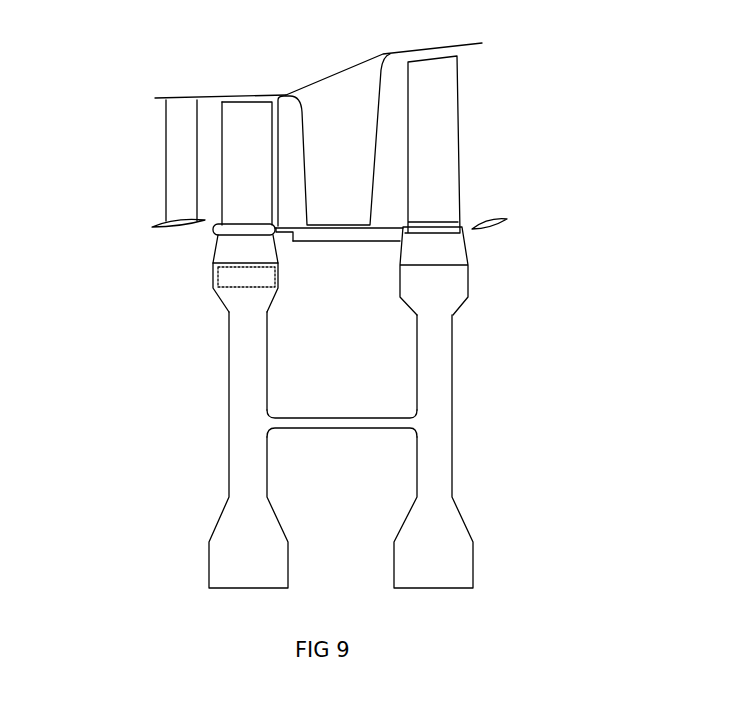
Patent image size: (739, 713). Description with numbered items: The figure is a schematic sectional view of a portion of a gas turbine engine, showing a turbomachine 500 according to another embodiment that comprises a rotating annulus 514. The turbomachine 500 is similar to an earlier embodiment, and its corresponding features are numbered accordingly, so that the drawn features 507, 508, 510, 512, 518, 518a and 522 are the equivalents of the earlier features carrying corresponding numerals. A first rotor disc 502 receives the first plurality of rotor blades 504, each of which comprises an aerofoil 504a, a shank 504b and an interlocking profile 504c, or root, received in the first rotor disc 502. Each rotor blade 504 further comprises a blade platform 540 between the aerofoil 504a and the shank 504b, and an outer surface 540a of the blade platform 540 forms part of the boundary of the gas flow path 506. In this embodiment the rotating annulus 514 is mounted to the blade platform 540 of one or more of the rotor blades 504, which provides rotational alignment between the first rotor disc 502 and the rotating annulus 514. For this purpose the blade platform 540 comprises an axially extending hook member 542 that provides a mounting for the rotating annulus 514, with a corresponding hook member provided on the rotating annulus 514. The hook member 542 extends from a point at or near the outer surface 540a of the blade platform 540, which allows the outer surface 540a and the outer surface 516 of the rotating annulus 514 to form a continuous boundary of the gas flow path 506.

The turbomachine 500 is at (88, 73).
The first rotor disc 502 is at (229, 430).
The first plurality of rotor blades 504 is at (260, 107).
The aerofoil 504a is at (223, 117).
The shank 504b is at (283, 245).
The interlocking profile 504c is at (225, 288).
The gas flow path 506 is at (280, 103).
The shroud line 507 is at (425, 48).
The second shank 508 is at (453, 398).
The third blade 510 is at (460, 108).
The cavity between shanks 512 is at (358, 350).
The rotating annulus 514 is at (369, 254).
The outer surface of the rotating annulus 516 is at (380, 227).
The fourth blade 518 is at (166, 172).
The lip of fourth blade 518a is at (187, 226).
The seal lip 522 is at (495, 227).
The blade platform 540 is at (232, 237).
The outer surface of the blade platform 540a is at (237, 223).
The axially extending hook member 542 is at (292, 240).